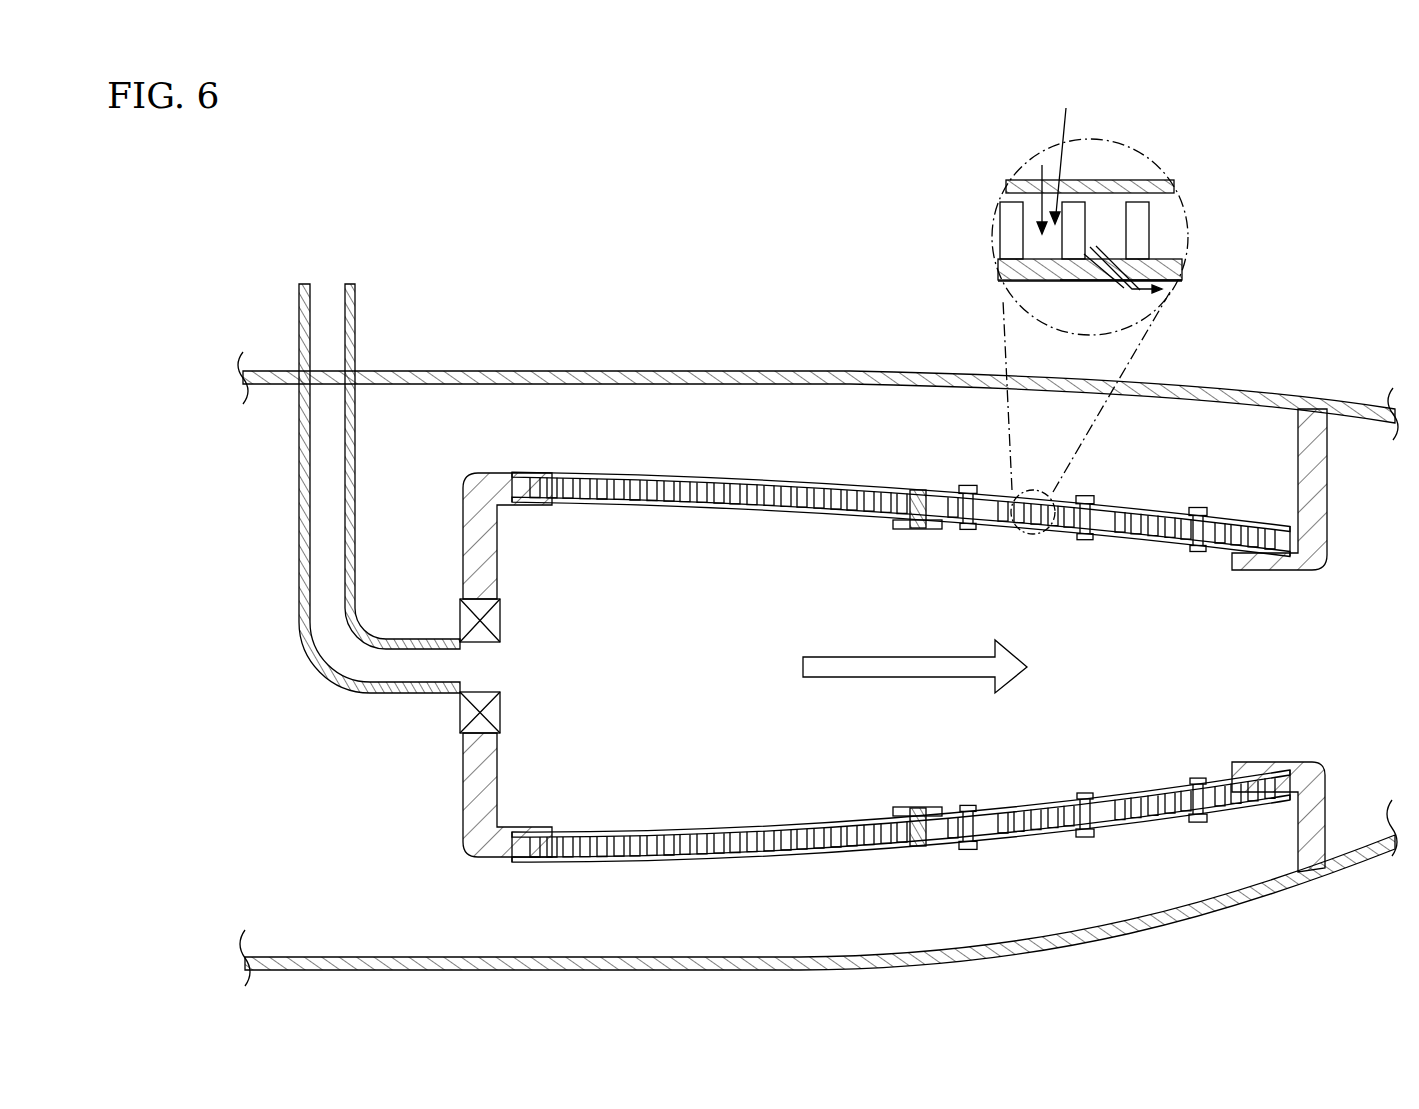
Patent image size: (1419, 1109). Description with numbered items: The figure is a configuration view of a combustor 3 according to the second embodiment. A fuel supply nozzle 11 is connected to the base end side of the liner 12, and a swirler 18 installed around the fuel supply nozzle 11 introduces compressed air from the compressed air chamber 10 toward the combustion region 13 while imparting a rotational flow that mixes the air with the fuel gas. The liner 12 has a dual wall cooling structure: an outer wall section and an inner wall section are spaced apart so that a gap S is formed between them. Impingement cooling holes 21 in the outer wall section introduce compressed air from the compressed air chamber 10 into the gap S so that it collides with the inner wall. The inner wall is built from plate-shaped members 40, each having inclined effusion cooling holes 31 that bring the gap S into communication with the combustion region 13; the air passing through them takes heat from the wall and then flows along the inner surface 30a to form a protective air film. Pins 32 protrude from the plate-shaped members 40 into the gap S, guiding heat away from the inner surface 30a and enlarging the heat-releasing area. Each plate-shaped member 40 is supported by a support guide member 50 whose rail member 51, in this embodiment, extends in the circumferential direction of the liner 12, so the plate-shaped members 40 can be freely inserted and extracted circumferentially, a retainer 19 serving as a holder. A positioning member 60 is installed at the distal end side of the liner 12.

The combustor 3 is at (457, 492).
The compressed air chamber 10 is at (726, 380).
The fuel supply nozzle 11 is at (368, 695).
The liner 12 is at (901, 626).
The combustion region 13 is at (670, 694).
The swirler 18 is at (458, 618).
The retainer 19 is at (1327, 490).
The impingement cooling hole 21 is at (1040, 163).
The inner surface 30a is at (1095, 280).
The effusion cooling hole 31 is at (1112, 258).
The pin 32 is at (1090, 218).
The plate-shaped member 40 is at (1000, 283).
The support guide member 50 is at (905, 531).
The rail member 51 is at (930, 529).
The positioning member 60 is at (1100, 487).
The gap S is at (1080, 104).